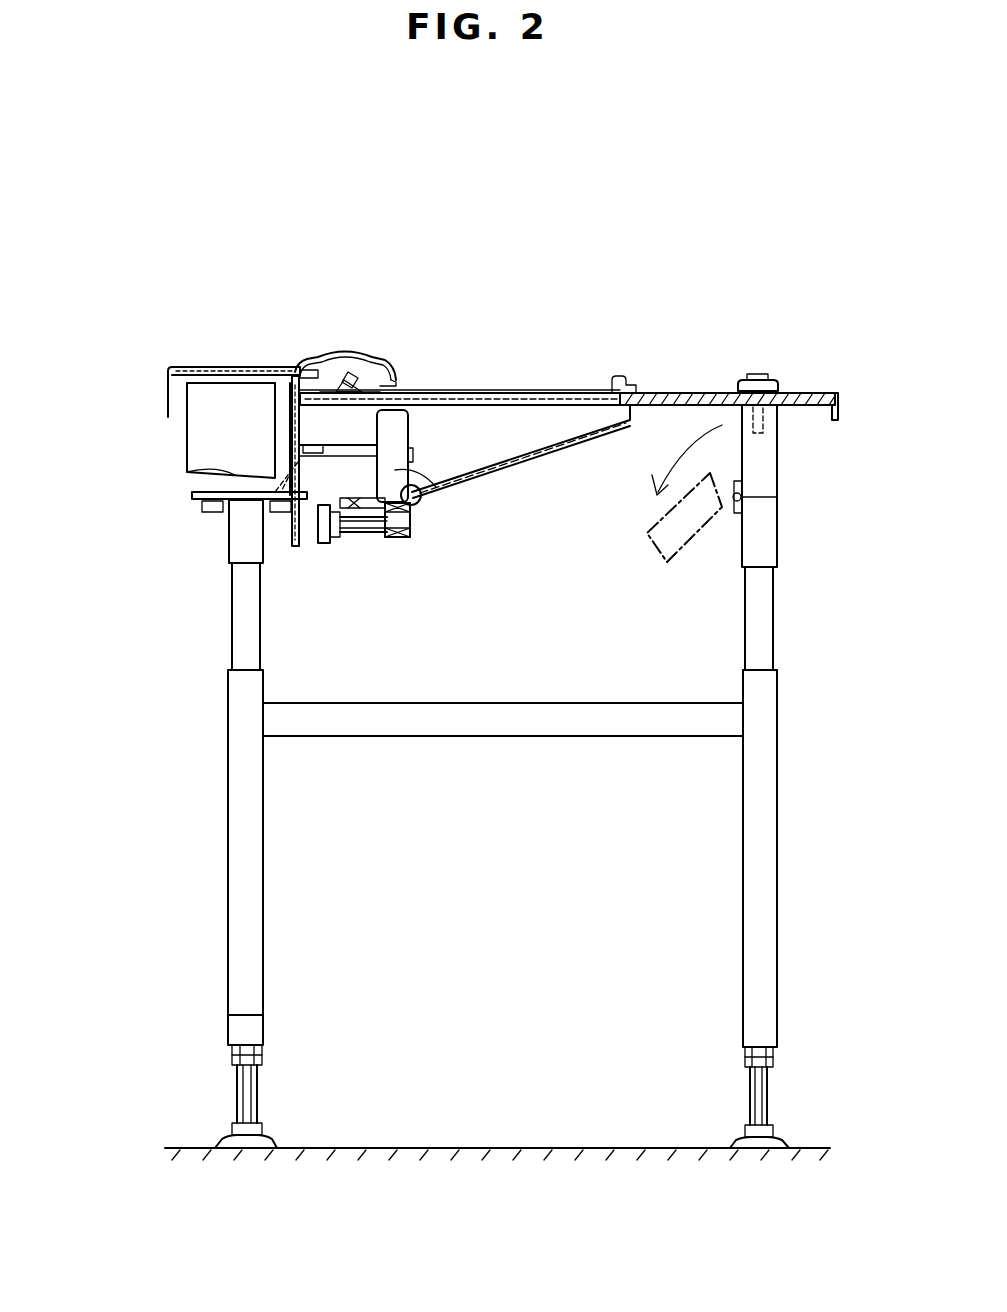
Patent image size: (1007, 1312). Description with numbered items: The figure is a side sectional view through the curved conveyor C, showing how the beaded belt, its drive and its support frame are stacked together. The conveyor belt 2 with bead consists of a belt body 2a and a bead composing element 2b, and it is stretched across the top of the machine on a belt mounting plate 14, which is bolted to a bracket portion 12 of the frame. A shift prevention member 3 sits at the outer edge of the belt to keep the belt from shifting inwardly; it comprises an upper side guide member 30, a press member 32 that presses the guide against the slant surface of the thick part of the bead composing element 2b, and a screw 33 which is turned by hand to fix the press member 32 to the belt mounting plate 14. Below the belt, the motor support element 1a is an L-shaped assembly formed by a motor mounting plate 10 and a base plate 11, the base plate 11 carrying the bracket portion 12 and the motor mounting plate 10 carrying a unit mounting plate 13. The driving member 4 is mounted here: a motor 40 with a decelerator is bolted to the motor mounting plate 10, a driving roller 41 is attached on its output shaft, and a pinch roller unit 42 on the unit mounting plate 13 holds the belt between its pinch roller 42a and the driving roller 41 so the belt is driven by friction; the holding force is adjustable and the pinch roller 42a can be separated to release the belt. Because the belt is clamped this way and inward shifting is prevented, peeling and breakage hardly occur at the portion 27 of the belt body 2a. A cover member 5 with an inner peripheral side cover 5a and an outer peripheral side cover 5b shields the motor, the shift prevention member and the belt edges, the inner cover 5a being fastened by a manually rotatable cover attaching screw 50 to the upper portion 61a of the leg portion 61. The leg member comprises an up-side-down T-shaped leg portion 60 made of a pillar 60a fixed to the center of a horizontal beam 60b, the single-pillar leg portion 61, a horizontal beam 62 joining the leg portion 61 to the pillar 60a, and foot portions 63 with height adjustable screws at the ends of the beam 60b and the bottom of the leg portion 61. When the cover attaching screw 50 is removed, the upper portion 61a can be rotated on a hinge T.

The motor support element 1a is at (184, 456).
The motor mounting plate 10 is at (276, 426).
The base plate 11 is at (230, 478).
The bracket portion 12 is at (308, 500).
The unit mounting plate 13 is at (305, 545).
The belt mounting plate 14 is at (556, 382).
The conveyor belt with bead 2 is at (460, 297).
The belt body 2a is at (495, 393).
The bead composing element 2b is at (408, 392).
The portion of the belt body 27 is at (420, 506).
The shift prevention member 3 is at (300, 255).
The upper side guide member 30 is at (372, 355).
The press member 32 is at (338, 378).
The screw 33 is at (312, 368).
The driving member 4 is at (437, 637).
The motor with decelerator 40 is at (245, 400).
The driving roller 41 is at (420, 503).
The pinch roller unit 42 is at (347, 659).
The pinch roller 42a is at (393, 537).
The cover member 5 is at (569, 248).
The inner peripheral side cover 5a is at (650, 393).
The outer peripheral side cover 5b is at (382, 392).
The cover attaching screw 50 is at (760, 377).
The leg portion 60 is at (165, 859).
The pillar 60a is at (243, 912).
The horizontal beam 60b is at (192, 1027).
The leg portion 61 is at (778, 846).
The upper portion of the leg portion 61a is at (766, 465).
The horizontal beam 62 is at (622, 725).
The foot portion 63 is at (210, 1102).
The hinge T is at (740, 520).
The curved conveyor C is at (743, 206).